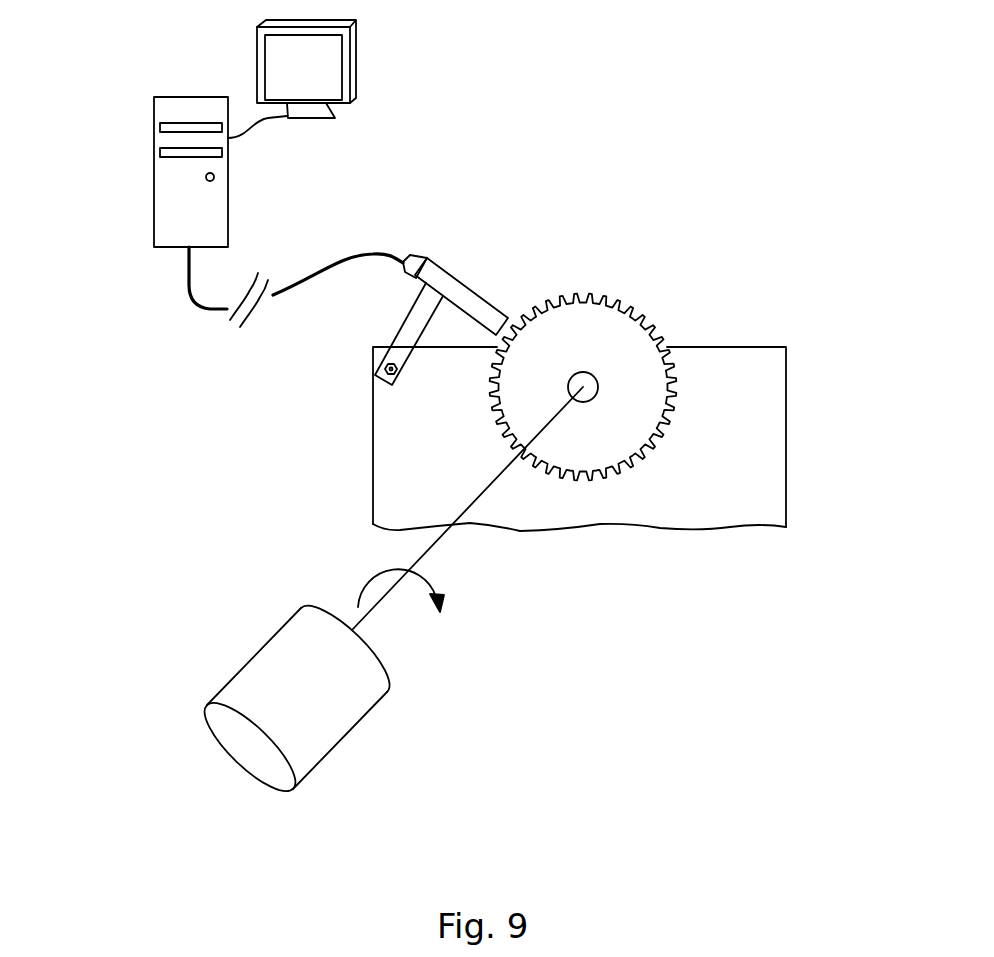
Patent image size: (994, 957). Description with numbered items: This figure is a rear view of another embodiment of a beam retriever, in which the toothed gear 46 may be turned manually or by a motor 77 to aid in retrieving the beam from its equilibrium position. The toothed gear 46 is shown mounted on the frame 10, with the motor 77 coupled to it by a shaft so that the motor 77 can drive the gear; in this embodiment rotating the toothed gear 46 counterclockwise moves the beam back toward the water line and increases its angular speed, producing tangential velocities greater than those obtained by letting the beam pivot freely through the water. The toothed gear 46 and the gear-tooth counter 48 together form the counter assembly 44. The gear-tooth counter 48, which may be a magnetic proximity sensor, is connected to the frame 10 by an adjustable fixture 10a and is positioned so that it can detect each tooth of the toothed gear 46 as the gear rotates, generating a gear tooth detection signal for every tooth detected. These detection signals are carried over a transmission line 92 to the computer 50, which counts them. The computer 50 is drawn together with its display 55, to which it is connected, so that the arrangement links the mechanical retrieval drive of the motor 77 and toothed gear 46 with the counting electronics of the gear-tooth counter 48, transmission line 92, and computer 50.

The frame 10 is at (786, 517).
The adjustable fixture 10a is at (410, 365).
The counter assembly 44 is at (591, 306).
The toothed gear 46 is at (637, 374).
The gear-tooth counter 48 is at (475, 293).
The computer 50 is at (154, 200).
The monitor / display 55 is at (358, 80).
The motor 77 is at (270, 663).
The transmission line 92 is at (182, 273).